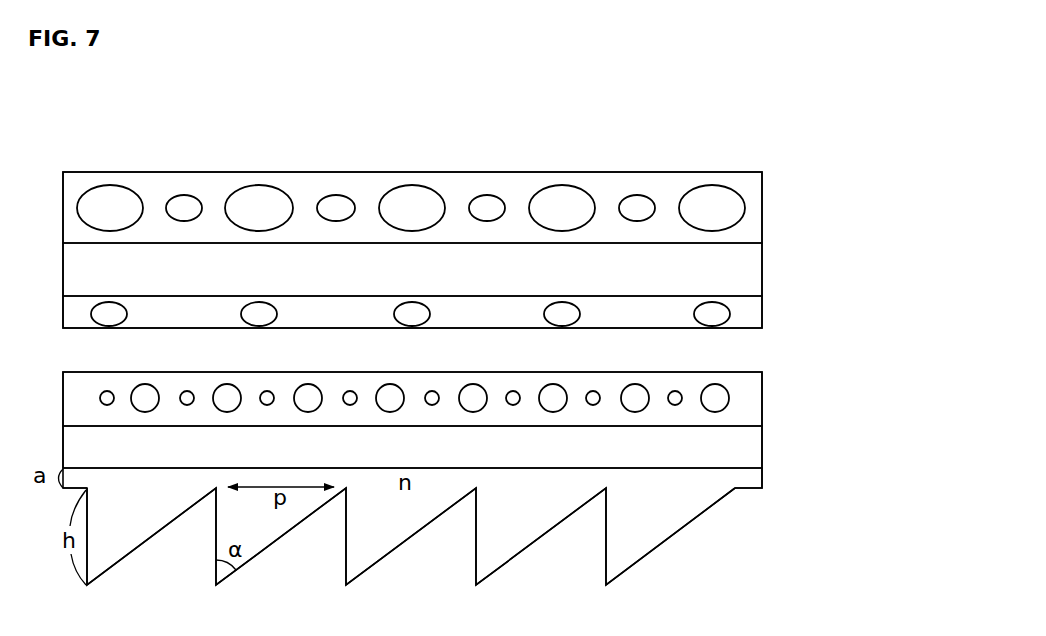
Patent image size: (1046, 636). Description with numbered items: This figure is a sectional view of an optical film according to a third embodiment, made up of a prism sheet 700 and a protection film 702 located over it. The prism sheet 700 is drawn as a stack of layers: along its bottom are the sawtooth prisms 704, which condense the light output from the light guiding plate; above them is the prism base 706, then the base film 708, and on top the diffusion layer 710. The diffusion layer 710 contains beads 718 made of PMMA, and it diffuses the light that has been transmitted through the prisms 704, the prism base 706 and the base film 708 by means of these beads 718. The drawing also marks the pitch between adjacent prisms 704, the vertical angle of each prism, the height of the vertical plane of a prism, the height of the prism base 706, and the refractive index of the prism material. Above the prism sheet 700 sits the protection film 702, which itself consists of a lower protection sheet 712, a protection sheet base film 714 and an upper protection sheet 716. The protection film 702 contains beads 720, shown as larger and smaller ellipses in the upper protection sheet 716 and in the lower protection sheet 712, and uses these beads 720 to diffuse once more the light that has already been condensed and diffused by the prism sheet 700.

The prism sheet 700 is at (762, 351).
The protection film 702 is at (742, 152).
The prisms 704 is at (666, 527).
The prism base 706 is at (752, 480).
The base film 708 is at (752, 445).
The diffusion layer 710 is at (752, 413).
The lower protection sheet 712 is at (752, 302).
The protection sheet base film 714 is at (755, 268).
The upper protection sheet 716 is at (752, 224).
The beads 718 is at (718, 393).
The beads 720 is at (726, 197).